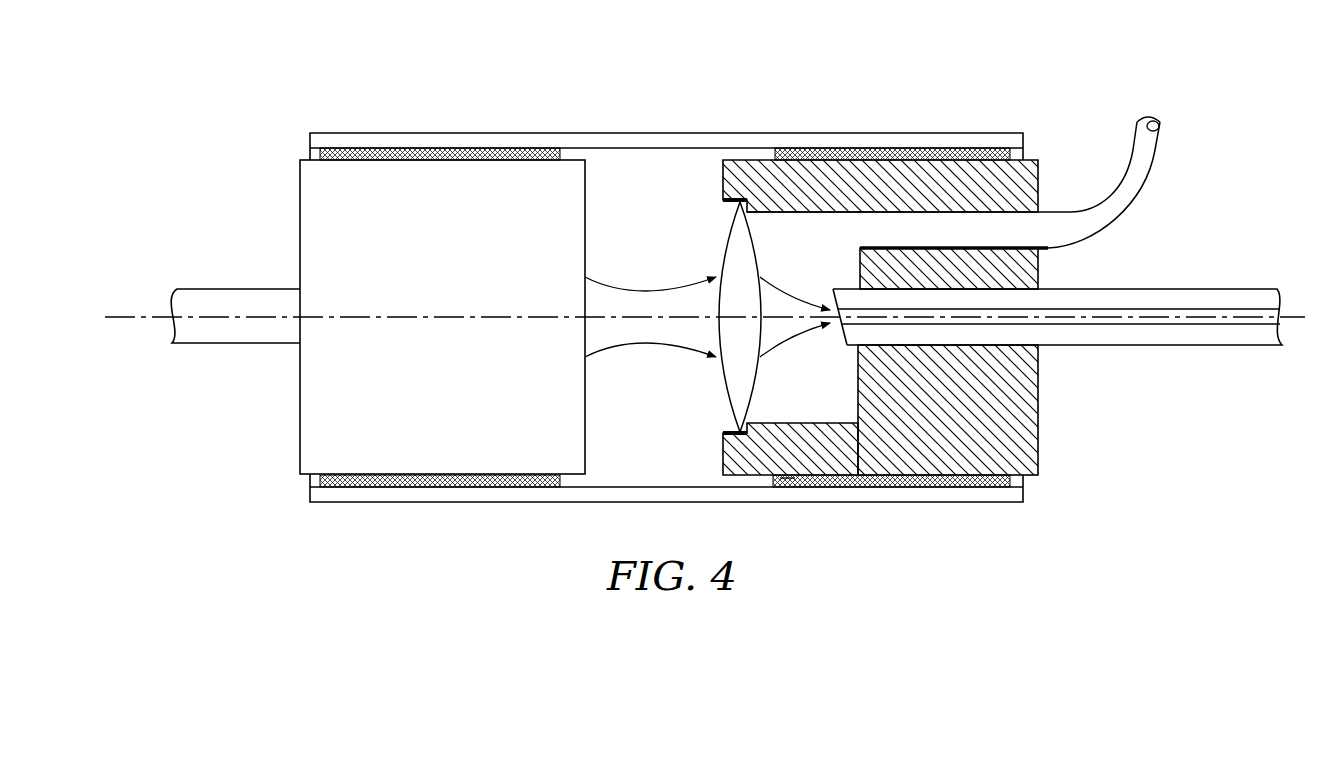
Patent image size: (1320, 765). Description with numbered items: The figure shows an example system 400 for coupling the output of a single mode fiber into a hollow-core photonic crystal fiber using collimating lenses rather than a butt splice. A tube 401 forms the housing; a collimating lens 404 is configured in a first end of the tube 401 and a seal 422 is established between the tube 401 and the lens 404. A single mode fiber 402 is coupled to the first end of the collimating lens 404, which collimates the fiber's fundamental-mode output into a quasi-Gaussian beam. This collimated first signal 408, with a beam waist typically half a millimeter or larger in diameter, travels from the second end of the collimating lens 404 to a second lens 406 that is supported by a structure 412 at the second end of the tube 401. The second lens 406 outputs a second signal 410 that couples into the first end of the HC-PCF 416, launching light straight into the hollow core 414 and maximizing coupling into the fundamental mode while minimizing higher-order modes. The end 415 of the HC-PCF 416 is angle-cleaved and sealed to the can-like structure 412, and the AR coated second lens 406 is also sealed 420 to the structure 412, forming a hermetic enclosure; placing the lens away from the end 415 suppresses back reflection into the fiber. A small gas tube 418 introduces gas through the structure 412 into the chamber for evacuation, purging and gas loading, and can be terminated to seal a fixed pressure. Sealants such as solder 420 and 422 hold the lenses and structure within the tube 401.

The system 400 is at (460, 90).
The tube 401 is at (548, 133).
The single mode fiber 402 is at (228, 290).
The collimating lens 404 is at (320, 410).
The second lens 406 is at (731, 243).
The first signal 408 is at (652, 293).
The second signal 410 is at (783, 297).
The structure 412 is at (1017, 420).
The hollow core 414 is at (1168, 318).
The end of HC-PCF fiber 415 is at (832, 296).
The HC-PCF 416 is at (1202, 290).
The gas tube 418 is at (1160, 162).
The seal 420 is at (900, 345).
The seal 422 is at (430, 488).